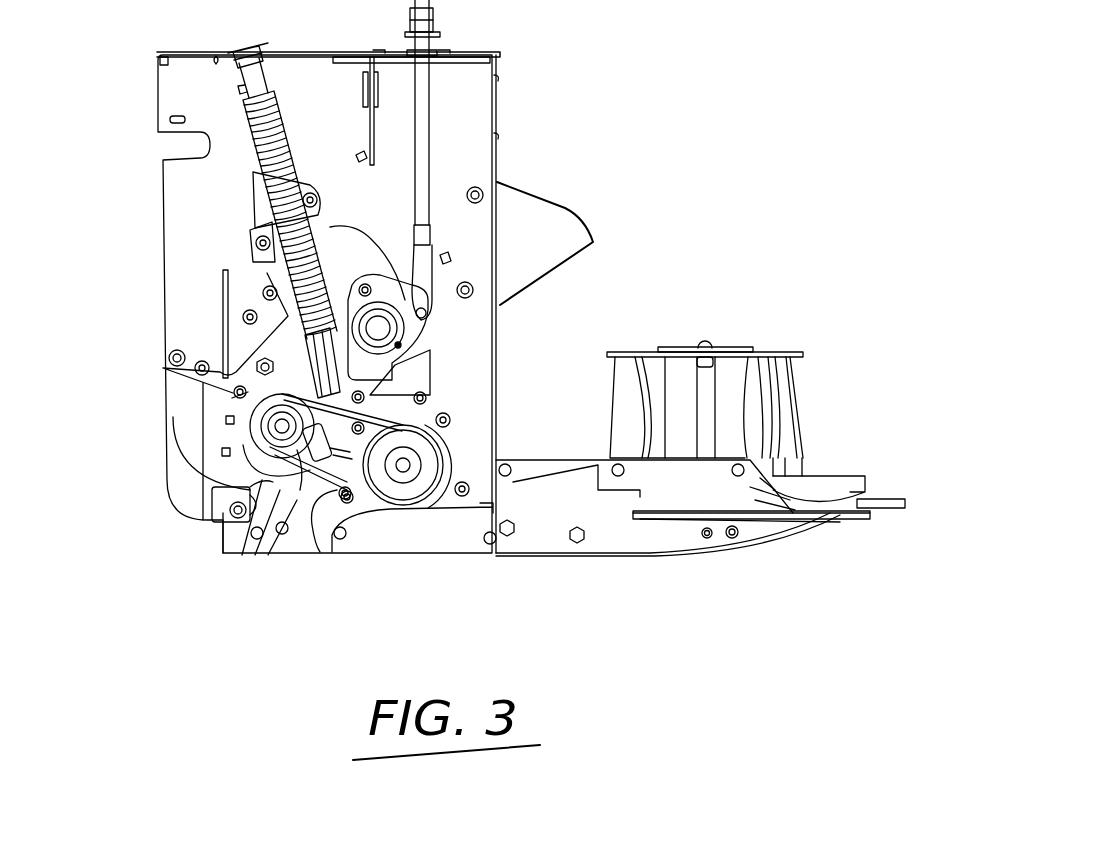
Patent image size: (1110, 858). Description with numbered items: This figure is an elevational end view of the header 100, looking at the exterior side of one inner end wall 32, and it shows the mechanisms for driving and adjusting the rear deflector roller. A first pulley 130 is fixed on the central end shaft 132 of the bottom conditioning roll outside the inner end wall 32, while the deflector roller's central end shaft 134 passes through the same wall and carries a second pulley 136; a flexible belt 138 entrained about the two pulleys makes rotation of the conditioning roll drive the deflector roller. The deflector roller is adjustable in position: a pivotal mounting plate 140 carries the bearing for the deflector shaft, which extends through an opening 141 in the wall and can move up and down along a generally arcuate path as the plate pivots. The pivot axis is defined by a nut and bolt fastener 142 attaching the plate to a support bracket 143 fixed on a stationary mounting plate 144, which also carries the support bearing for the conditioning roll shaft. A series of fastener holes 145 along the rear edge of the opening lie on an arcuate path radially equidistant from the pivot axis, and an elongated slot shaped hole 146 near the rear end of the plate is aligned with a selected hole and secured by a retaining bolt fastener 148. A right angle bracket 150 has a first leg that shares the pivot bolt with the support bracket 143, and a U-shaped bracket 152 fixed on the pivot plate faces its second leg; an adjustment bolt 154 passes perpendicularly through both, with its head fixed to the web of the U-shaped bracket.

The drive assembly 100 is at (578, 203).
The inner end wall 32 is at (205, 243).
The first pulley 130 is at (440, 500).
The central end shaft 132 is at (415, 498).
The central end shaft of the deflector roller 134 is at (270, 432).
The second pulley 136 is at (233, 483).
The flexible belt 138 is at (300, 470).
The pivotal mounting plate 140 is at (270, 357).
The opening 141 is at (267, 482).
The nut and bolt fastener 142 is at (412, 380).
The support bracket 143 is at (318, 480).
The stationary mounting plate 144 is at (480, 448).
The fastener holes 145 is at (222, 452).
The elongated slot shaped hole 146 is at (262, 433).
The retaining bolt fastener 148 is at (232, 398).
The right angle bracket 150 is at (350, 480).
The U-shaped bracket 152 is at (268, 485).
The adjustment bolt 154 is at (353, 480).